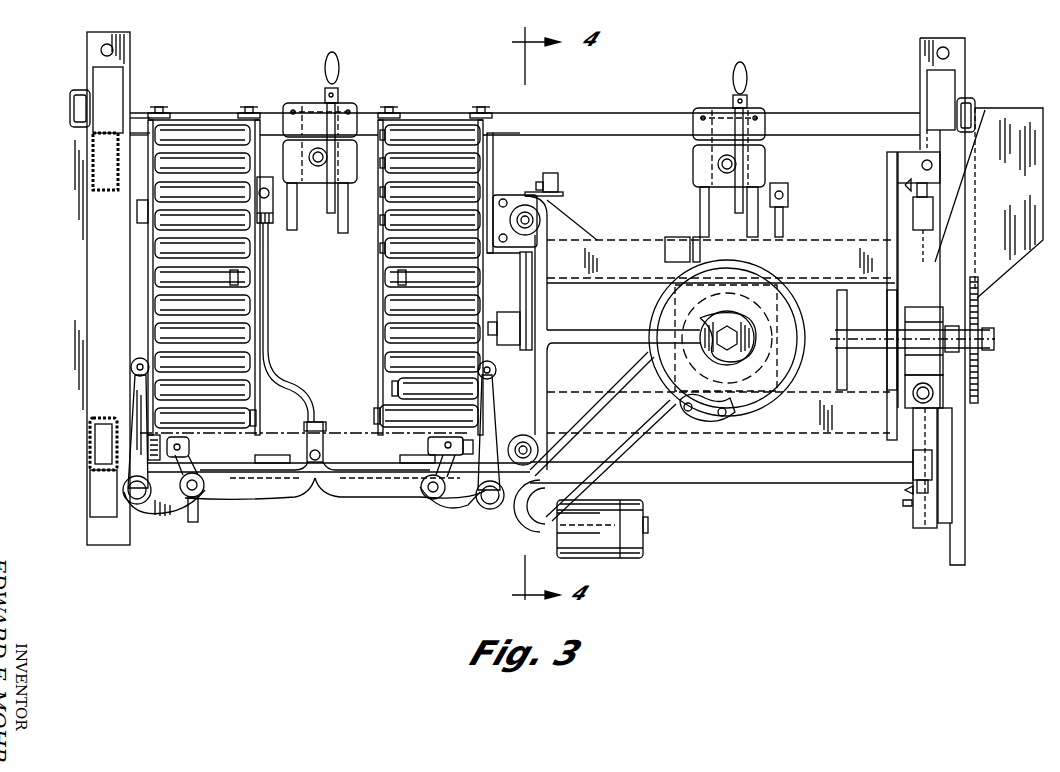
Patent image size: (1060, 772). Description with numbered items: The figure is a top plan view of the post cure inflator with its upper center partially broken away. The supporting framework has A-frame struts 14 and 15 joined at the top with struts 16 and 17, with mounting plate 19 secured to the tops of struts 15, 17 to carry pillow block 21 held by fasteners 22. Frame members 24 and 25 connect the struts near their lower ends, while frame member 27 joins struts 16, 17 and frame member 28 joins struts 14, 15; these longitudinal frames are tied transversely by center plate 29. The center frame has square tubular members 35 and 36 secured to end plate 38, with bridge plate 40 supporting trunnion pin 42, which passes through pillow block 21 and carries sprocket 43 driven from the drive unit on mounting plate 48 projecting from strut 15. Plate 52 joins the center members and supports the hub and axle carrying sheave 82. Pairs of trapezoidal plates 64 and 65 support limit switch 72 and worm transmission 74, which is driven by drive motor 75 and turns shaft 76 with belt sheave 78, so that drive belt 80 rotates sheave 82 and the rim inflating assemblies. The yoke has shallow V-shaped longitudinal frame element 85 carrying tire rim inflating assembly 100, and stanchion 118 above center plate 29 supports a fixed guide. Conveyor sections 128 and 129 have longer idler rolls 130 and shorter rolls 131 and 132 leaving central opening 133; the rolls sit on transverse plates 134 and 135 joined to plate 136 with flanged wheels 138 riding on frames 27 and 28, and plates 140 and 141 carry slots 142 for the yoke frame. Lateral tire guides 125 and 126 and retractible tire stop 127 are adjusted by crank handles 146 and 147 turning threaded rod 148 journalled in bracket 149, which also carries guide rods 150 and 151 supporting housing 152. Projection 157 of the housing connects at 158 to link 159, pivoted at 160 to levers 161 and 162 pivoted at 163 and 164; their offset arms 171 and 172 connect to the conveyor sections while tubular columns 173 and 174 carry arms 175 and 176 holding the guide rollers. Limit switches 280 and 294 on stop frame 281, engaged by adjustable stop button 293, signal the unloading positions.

The A-frame strut 14 is at (100, 80).
The frame member 24 is at (70, 100).
The strut 16 is at (90, 448).
The frame member 28 is at (572, 113).
The A-frame strut 15 is at (957, 72).
The frame member 25 is at (976, 102).
The mounting plate 48 is at (995, 265).
The end plate 38 is at (893, 440).
The adjustable stop button 293 is at (922, 165).
The mounting plate 19 is at (958, 400).
The strut 17 is at (950, 452).
The limit switch 280 is at (935, 212).
The limit switch 294 is at (930, 468).
The stop frame 281 is at (925, 505).
The bridge plate 40 is at (848, 314).
The trunnion pin 42 is at (994, 342).
The pillow block 21 is at (905, 365).
The fasteners 22 is at (912, 398).
The sprocket 43 is at (980, 314).
The center frame member 35 is at (820, 245).
The center frame member 36 is at (762, 430).
The frame member 27 is at (753, 484).
The transverse plate 134 is at (150, 232).
The plate 136 is at (195, 118).
The flanged wheels 138 is at (246, 112).
The idler rolls 130 is at (158, 245).
The rolls 131 is at (160, 272).
The rolls 132 is at (160, 303).
The transverse plate 135 is at (218, 328).
The conveyor section 128 is at (242, 285).
The lateral tire guide 125 is at (132, 364).
The housing 152 is at (283, 118).
The bracket 149 is at (356, 108).
The retractible tire stop 127 is at (318, 168).
The crank handle 146 is at (328, 72).
The threaded rod 148 is at (345, 194).
The guide rod 150 is at (293, 232).
The guide rod 151 is at (343, 235).
The projection 157 is at (255, 182).
The connection 158 is at (265, 222).
The link 159 is at (290, 378).
The central opening 133 is at (305, 342).
The slots 142 is at (405, 330).
The conveyor section 129 is at (398, 300).
The plate 140 is at (408, 370).
The lateral tire guide 126 is at (480, 388).
The arm 176 is at (490, 418).
The plate 141 is at (488, 152).
The stanchion 118 is at (510, 195).
The limit switch 72 is at (560, 182).
The trapezoidal plates 64 is at (565, 218).
The center plate 29 is at (520, 265).
The longitudinal frame element 85 is at (568, 333).
The tire rim inflating assembly 100 is at (768, 397).
The sheave 82 is at (668, 308).
The plate 52 is at (800, 301).
The drive belt 80 is at (628, 383).
The trapezoidal plates 65 is at (548, 441).
The worm transmission 74 is at (523, 535).
The drive motor 75 is at (610, 556).
The shaft 76 is at (558, 514).
The belt sheave 78 is at (558, 534).
The arm 175 is at (135, 396).
The tubular column 173 is at (128, 503).
The pivot 163 is at (190, 497).
The offset arm 171 is at (190, 452).
The lever 161 is at (230, 492).
The lever 162 is at (380, 492).
The pivot 160 is at (315, 468).
The offset arm 172 is at (435, 458).
The pivot 164 is at (432, 495).
The tubular column 174 is at (488, 508).
The crank handle 147 is at (735, 76).